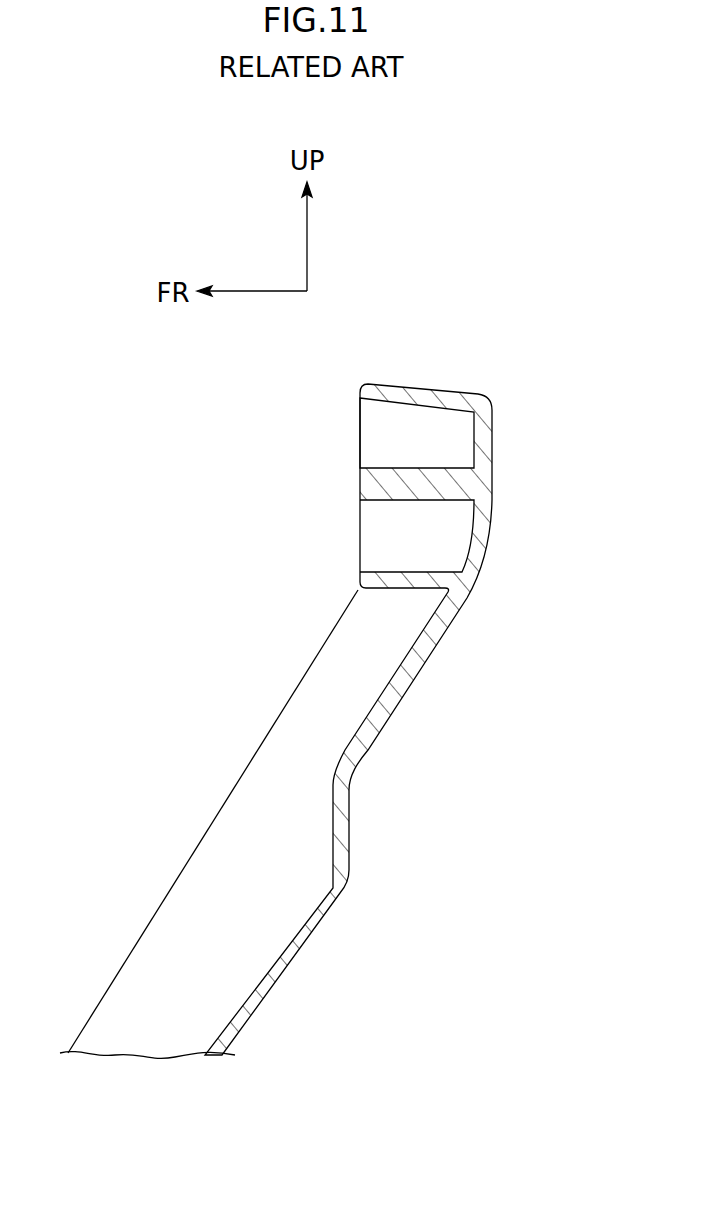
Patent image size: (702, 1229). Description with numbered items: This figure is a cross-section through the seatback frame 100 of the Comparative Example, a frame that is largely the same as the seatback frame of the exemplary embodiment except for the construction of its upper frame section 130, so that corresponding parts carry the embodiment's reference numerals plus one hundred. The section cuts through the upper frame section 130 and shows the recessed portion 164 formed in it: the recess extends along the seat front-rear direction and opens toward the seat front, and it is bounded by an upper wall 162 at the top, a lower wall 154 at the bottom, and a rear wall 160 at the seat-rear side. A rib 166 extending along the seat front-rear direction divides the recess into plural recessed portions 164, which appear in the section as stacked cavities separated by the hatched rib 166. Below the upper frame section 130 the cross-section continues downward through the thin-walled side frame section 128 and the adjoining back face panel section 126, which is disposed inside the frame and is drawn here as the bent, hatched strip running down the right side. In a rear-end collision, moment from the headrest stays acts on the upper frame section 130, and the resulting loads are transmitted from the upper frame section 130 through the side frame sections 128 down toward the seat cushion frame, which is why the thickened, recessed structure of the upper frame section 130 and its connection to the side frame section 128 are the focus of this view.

The seatback frame 100 is at (473, 657).
The upper wall 162 is at (412, 390).
The upper frame section 130 is at (488, 396).
The recessed portion 164 is at (440, 450).
The rib 166 is at (385, 485).
The rear wall 160 is at (485, 528).
The lower wall 154 is at (383, 592).
The side frame section 128 is at (216, 818).
The back face panel section 126 is at (341, 823).